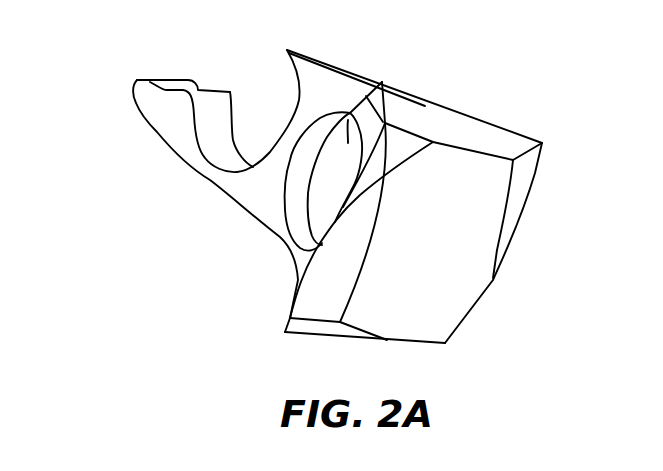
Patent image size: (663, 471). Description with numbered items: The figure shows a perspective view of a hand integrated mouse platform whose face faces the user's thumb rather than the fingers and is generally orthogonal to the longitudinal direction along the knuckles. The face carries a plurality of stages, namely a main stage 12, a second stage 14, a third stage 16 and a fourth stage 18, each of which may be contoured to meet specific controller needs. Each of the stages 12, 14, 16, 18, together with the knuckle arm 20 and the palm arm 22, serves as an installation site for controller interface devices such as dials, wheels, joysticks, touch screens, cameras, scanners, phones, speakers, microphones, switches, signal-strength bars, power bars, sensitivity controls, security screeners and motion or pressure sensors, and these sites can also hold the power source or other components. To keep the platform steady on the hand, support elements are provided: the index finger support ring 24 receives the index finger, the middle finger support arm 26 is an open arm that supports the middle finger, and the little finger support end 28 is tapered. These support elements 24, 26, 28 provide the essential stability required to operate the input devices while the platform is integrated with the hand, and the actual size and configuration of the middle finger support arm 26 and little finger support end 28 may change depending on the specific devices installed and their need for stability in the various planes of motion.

The main stage 12 is at (450, 288).
The second stage 14 is at (523, 173).
The third stage 16 is at (406, 143).
The fourth stage 18 is at (317, 306).
The knuckle arm 20 is at (332, 83).
The index finger support ring 24 is at (380, 77).
The palm arm 22 is at (260, 195).
The middle finger support arm 26 is at (258, 110).
The little finger support end 28 is at (133, 85).